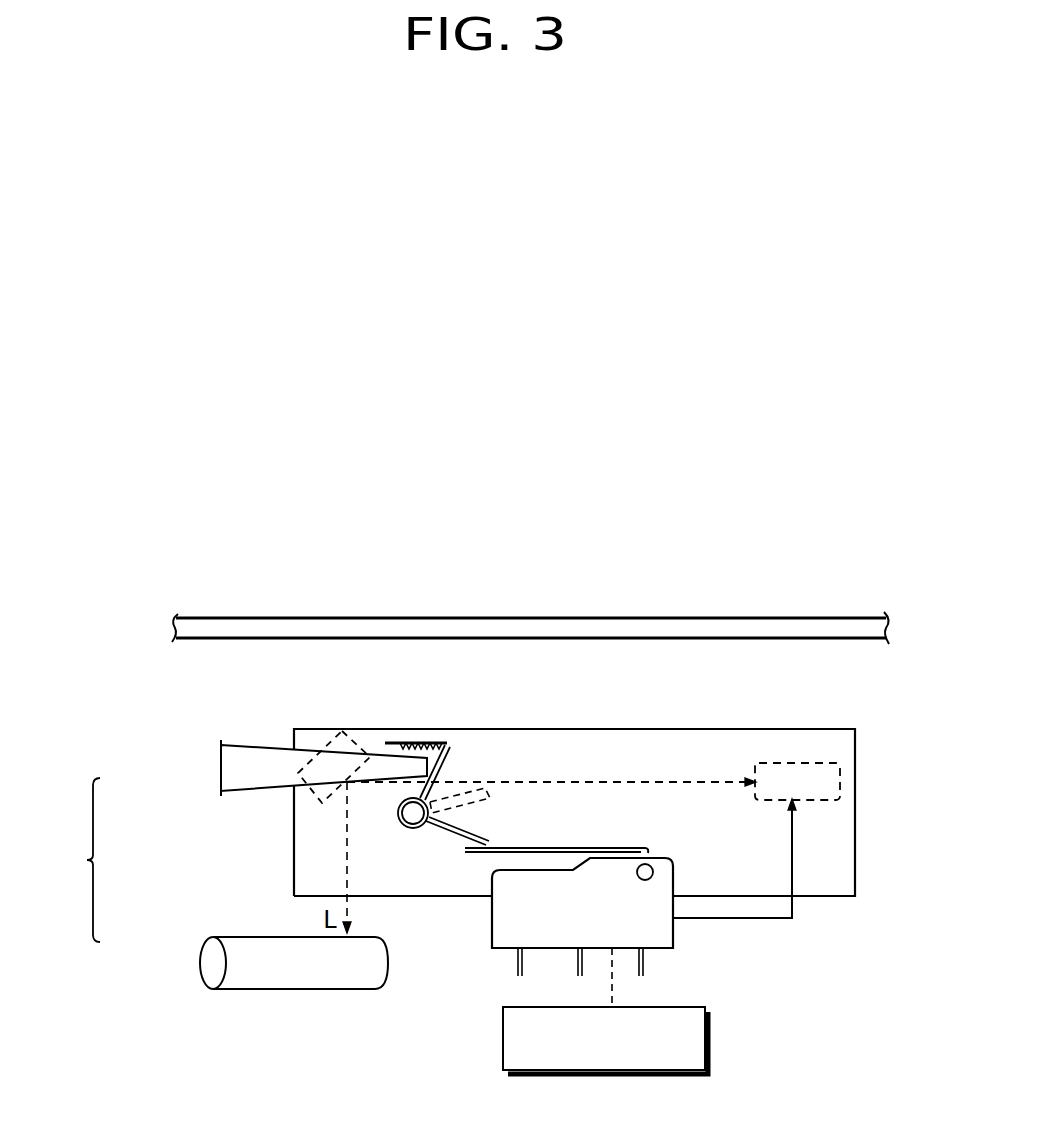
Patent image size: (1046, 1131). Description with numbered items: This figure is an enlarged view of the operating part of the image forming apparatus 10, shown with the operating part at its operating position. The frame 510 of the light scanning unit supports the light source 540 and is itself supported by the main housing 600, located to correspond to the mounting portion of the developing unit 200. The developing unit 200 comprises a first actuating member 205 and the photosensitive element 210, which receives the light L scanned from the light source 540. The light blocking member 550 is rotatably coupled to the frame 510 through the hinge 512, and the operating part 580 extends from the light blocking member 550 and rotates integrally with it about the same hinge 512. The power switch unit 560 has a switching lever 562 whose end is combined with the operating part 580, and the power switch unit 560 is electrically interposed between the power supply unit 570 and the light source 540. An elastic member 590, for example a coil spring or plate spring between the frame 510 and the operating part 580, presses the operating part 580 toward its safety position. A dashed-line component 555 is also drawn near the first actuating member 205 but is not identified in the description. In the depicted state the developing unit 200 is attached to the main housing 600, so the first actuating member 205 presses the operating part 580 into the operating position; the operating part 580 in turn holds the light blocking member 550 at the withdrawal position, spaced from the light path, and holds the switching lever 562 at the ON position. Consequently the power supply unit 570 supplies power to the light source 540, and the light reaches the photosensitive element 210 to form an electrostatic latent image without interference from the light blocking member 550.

The image forming apparatus 10 is at (174, 524).
The developing unit 200 is at (46, 873).
The first actuating member 205 is at (218, 770).
The photosensitive element 210 is at (213, 937).
The frame 510 is at (610, 729).
The hinge 512 is at (401, 827).
The light source 540 is at (796, 763).
The light blocking member 550 is at (477, 768).
The detection position 555 is at (318, 742).
The power switch unit 560 is at (675, 938).
The switching lever 562 is at (599, 846).
The power supply unit 570 is at (712, 1025).
The operating part 580 is at (446, 745).
The elastic member 590 is at (397, 743).
The main housing 600 is at (562, 617).